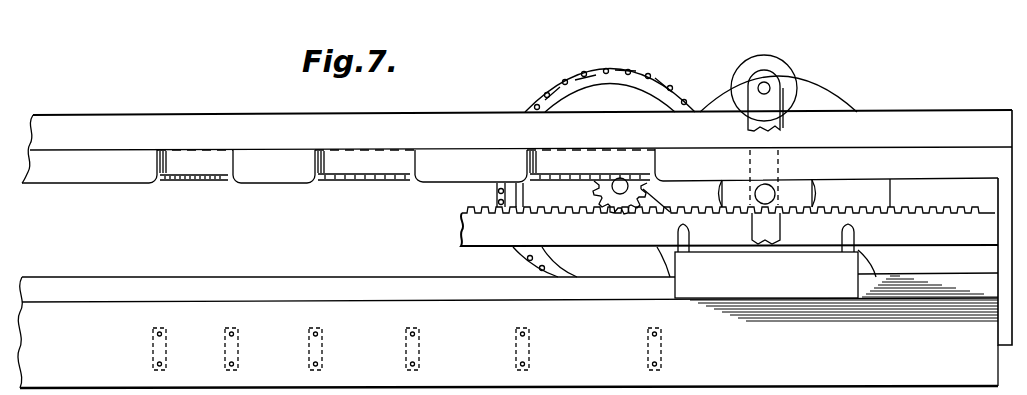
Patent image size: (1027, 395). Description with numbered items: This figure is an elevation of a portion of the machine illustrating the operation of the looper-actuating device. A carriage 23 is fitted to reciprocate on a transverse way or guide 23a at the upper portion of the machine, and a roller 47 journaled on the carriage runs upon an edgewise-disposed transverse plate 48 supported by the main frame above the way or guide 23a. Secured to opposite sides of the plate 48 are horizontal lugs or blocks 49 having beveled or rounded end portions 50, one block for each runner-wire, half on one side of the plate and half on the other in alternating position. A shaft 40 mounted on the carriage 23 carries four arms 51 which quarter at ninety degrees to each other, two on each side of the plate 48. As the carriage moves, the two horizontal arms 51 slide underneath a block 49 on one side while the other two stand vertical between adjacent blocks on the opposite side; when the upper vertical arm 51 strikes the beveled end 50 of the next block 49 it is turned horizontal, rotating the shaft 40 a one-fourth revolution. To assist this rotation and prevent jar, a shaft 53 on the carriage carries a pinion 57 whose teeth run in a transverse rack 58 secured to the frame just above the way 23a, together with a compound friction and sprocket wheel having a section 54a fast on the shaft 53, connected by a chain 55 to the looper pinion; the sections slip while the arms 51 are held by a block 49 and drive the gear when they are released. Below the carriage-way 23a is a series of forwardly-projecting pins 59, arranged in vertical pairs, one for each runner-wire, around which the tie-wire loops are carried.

The carriage 23 is at (515, 249).
The transverse way or guide 23a is at (844, 313).
The shaft 40 is at (766, 198).
The roller 47 is at (769, 64).
The transverse plate 48 is at (517, 146).
The lugs or blocks 49 is at (510, 178).
The beveled or rounded end portions 50 is at (322, 186).
The arms 51 is at (782, 157).
The shaft 53 is at (614, 182).
The wheel-section 54a is at (617, 101).
The chain 55 is at (573, 73).
The pinion 57 is at (622, 197).
The transverse rack 58 is at (729, 227).
The pins 59 is at (322, 333).